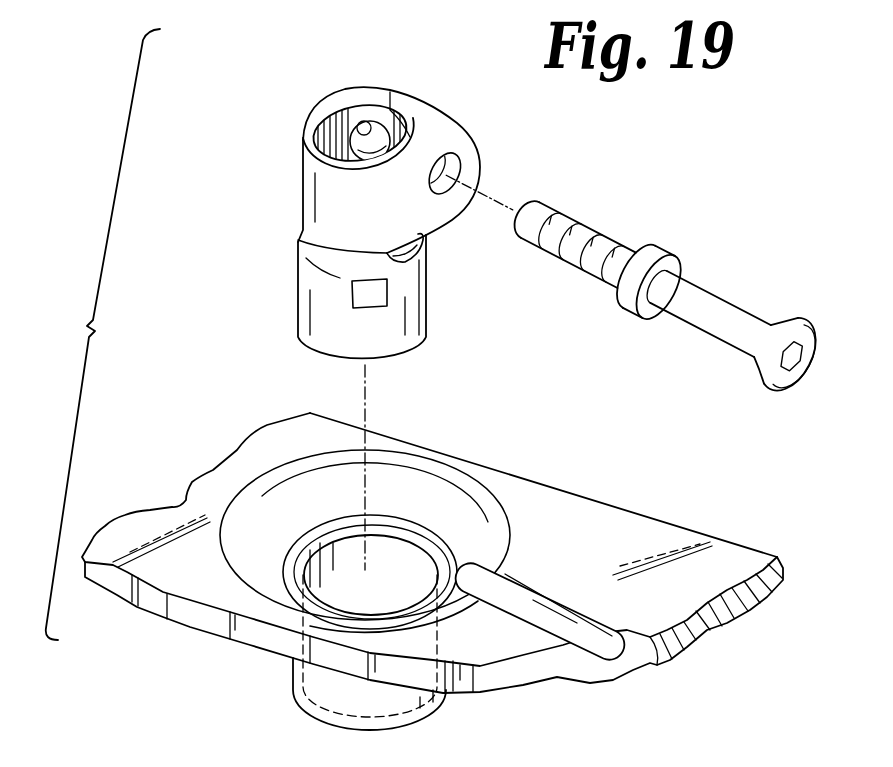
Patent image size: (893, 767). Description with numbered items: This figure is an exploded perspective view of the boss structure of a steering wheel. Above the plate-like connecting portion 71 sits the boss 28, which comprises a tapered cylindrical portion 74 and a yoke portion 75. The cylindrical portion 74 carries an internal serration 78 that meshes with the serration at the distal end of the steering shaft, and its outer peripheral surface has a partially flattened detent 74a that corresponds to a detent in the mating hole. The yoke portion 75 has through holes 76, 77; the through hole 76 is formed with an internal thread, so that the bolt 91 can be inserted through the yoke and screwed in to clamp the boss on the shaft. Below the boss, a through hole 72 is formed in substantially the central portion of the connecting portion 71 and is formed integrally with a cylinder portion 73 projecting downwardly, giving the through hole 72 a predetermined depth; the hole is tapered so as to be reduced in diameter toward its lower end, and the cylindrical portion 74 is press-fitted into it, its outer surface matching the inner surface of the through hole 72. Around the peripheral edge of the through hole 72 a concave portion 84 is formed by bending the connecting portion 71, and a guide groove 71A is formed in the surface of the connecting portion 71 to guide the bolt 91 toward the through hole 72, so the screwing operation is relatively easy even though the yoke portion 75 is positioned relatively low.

The boss 28 is at (284, 174).
The cylindrical portion 74 is at (300, 313).
The detent 74a is at (380, 297).
The yoke portion 75 is at (328, 113).
The through hole 76 is at (372, 122).
The through hole 77 is at (452, 161).
The serration 78 is at (348, 108).
The bolt 91 is at (718, 294).
The connecting portion 71 is at (632, 520).
The guide groove 71A is at (520, 620).
The through hole 72 is at (414, 553).
The cylinder portion 73 is at (292, 684).
The concave portion 84 is at (253, 542).